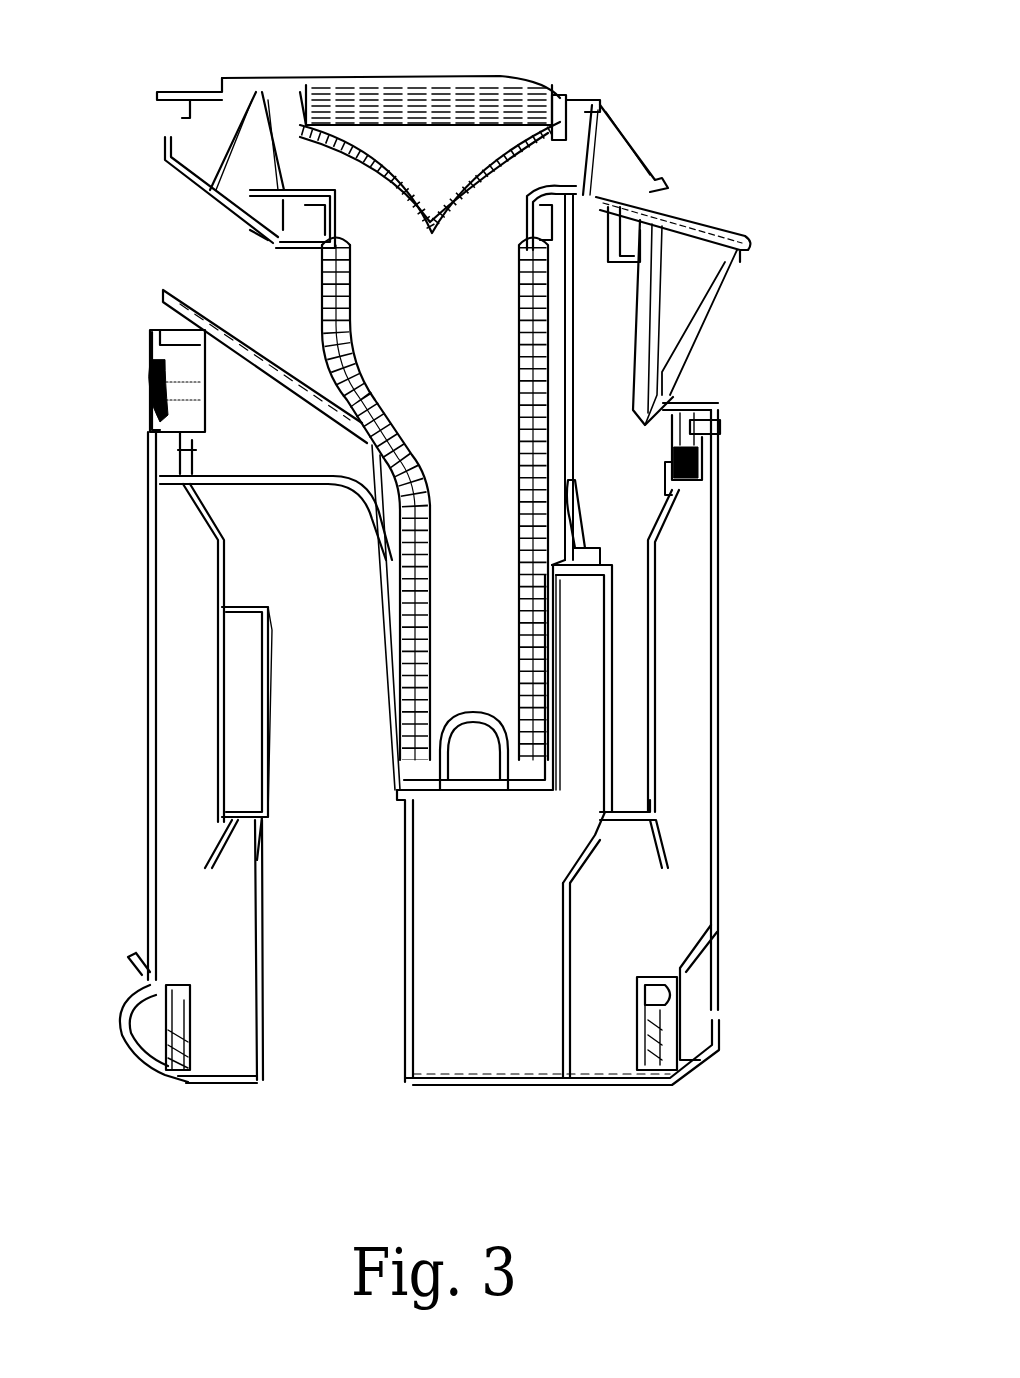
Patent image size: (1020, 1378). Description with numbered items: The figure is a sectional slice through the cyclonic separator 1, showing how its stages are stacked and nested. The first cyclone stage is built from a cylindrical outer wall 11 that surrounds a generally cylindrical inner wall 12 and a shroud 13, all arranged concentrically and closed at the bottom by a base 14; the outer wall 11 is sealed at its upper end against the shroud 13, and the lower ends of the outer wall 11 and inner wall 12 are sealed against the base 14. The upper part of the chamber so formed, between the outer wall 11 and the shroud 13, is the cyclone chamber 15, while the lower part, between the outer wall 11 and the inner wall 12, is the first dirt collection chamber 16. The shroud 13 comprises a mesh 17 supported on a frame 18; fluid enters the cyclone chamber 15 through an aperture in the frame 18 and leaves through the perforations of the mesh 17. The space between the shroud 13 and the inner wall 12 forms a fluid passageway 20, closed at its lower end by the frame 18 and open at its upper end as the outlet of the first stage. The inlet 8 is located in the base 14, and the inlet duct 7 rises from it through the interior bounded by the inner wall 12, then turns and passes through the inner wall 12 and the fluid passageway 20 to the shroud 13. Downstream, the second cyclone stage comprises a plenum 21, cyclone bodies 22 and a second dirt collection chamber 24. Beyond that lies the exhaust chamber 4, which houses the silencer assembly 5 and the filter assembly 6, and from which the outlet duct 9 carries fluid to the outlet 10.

The cyclonic separator 1 is at (766, 102).
The exhaust chamber 4 is at (479, 416).
The silencer assembly 5 is at (483, 80).
The filter assembly 6 is at (518, 283).
The inlet duct 7 is at (410, 972).
The inlet 8 is at (323, 1085).
The outlet duct 9 is at (259, 352).
The outlet 10 is at (157, 233).
The outer wall 11 is at (720, 806).
The inner wall 12 is at (575, 903).
The shroud 13 is at (210, 705).
The base 14 is at (527, 1085).
The cyclone chamber 15 is at (170, 585).
The first dirt collection chamber 16 is at (205, 938).
The mesh 17 is at (645, 702).
The frame 18 is at (650, 530).
The fluid passageway 20 is at (620, 620).
The plenum 21 is at (700, 436).
The cyclone bodies 22 is at (733, 308).
The second dirt collection chamber 24 is at (514, 1040).